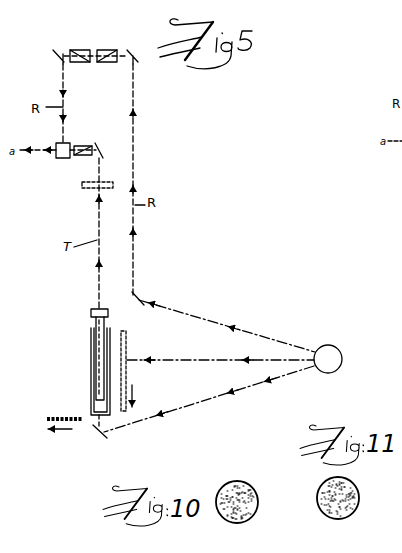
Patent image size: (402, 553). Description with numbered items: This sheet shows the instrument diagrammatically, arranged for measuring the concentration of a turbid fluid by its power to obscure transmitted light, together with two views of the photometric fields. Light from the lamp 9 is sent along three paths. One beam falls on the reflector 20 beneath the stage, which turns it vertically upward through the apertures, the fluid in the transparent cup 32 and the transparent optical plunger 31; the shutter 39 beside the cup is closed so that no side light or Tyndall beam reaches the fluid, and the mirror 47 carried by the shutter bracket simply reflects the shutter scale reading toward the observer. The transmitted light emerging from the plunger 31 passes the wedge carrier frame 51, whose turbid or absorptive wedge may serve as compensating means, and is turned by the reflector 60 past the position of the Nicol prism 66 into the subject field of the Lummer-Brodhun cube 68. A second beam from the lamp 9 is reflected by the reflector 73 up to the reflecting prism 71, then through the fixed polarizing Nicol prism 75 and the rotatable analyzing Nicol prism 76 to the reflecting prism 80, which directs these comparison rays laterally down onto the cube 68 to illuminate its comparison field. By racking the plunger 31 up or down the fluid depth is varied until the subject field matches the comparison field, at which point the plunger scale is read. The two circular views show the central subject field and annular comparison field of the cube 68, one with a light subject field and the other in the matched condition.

In FIG. 5, the electric lamp 9 is at (334, 352).
In FIG. 5, the reflector 20 is at (103, 440).
In FIG. 5, the transparent optical plunger 31 is at (108, 321).
In FIG. 5, the transparent fluid holding cup 32 is at (91, 367).
In FIG. 5, the vertically slidable shutter 39 is at (127, 341).
In FIG. 5, the mirror 47 is at (62, 416).
In FIG. 5, the wedge carrier frame 51 is at (82, 188).
In FIG. 5, the reflector 60 is at (104, 150).
In FIG. 5, the Nicol prism 66 is at (84, 146).
In FIG. 5, the Lummer-Brodhun cube 68 is at (62, 159).
In FIG. 10, the Lummer-Brodhun cube 68 is at (251, 487).
In FIG. 11, the Lummer-Brodhun cube 68 is at (354, 485).
In FIG. 5, the reflecting prism 71 is at (140, 48).
In FIG. 5, the reflector 73 is at (133, 297).
In FIG. 5, the polarizing Nicol prism 75 is at (108, 50).
In FIG. 5, the analyzing Nicol prism 76 is at (80, 50).
In FIG. 5, the reflecting prism 80 is at (53, 56).